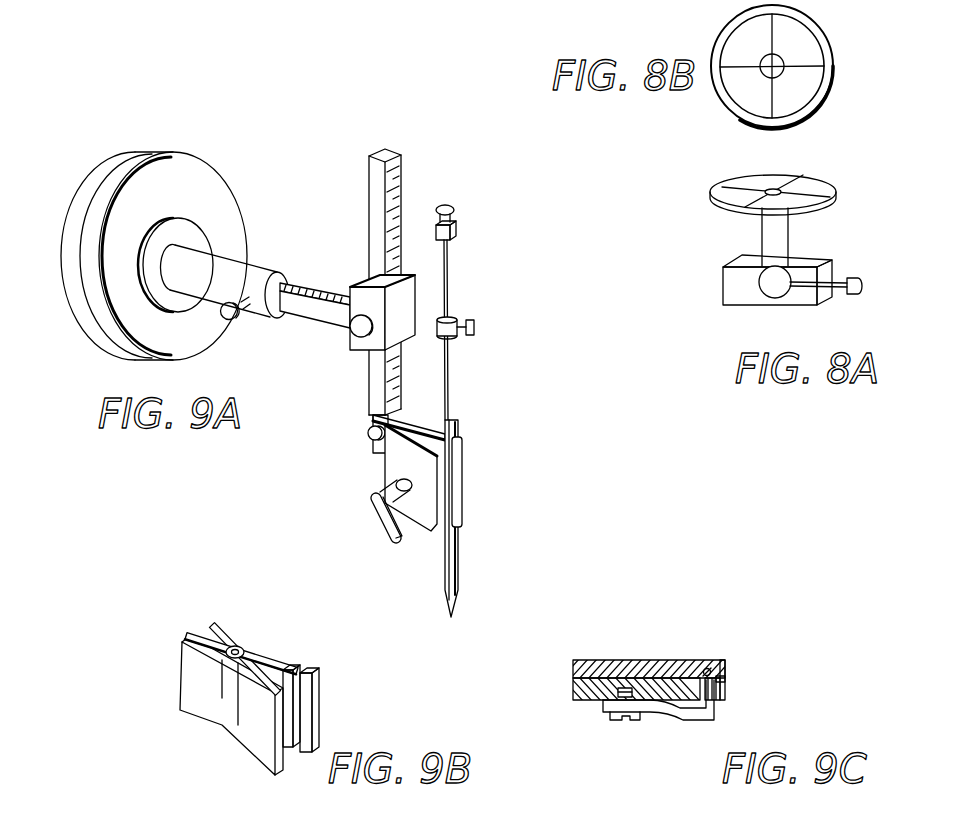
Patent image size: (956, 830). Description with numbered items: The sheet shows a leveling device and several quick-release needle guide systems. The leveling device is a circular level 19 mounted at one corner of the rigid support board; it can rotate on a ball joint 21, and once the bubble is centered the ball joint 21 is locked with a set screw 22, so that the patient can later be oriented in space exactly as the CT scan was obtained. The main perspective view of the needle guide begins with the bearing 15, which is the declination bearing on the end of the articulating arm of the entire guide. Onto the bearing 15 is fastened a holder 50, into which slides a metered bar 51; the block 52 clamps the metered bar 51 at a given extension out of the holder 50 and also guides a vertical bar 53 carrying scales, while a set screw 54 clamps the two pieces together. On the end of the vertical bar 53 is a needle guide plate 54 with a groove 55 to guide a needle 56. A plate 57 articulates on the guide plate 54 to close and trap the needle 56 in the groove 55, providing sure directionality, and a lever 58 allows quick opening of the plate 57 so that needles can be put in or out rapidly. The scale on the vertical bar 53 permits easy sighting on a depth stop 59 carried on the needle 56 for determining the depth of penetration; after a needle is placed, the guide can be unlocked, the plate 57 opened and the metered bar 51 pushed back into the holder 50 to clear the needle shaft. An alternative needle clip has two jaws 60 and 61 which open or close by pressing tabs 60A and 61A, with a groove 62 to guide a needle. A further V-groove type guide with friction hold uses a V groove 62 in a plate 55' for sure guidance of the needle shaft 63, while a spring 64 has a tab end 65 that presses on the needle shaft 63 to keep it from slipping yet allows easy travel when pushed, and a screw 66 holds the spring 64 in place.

In FIG. 9A, the bearing 15 is at (100, 342).
In FIG. 9A, the holder 50 is at (228, 263).
In FIG. 9A, the metered bar 51 is at (308, 317).
In FIG. 9A, the block 52 is at (362, 343).
In FIG. 9A, the vertical bar 53 is at (400, 168).
In FIG. 9A, the set screw / needle guide plate 54 is at (358, 330).
In FIG. 9A, the groove 55 is at (478, 518).
In FIG. 9A, the needle 56 is at (450, 288).
In FIG. 9A, the plate 57 is at (392, 464).
In FIG. 9C, the plate 57 is at (726, 698).
In FIG. 9A, the lever 58 is at (388, 533).
In FIG. 9A, the depth stop 59 is at (476, 327).
In FIG. 8A, the circular level 19 is at (837, 206).
In FIG. 8A, the ball joint 21 is at (760, 284).
In FIG. 8A, the set screw 22 is at (857, 281).
In FIG. 9B, the jaw 60 is at (255, 742).
In FIG. 9B, the press tab 60A is at (189, 683).
In FIG. 9B, the jaw 61 is at (313, 713).
In FIG. 9B, the press tab 61A is at (263, 610).
In FIG. 9B, the groove 62 is at (300, 668).
In FIG. 9C, the groove 62 is at (710, 670).
In FIG. 9C, the plate 55' is at (646, 652).
In FIG. 9C, the needle shaft 63 is at (726, 666).
In FIG. 9C, the spring 64 is at (680, 718).
In FIG. 9C, the tab end 65 is at (726, 679).
In FIG. 9C, the screw 66 is at (615, 718).